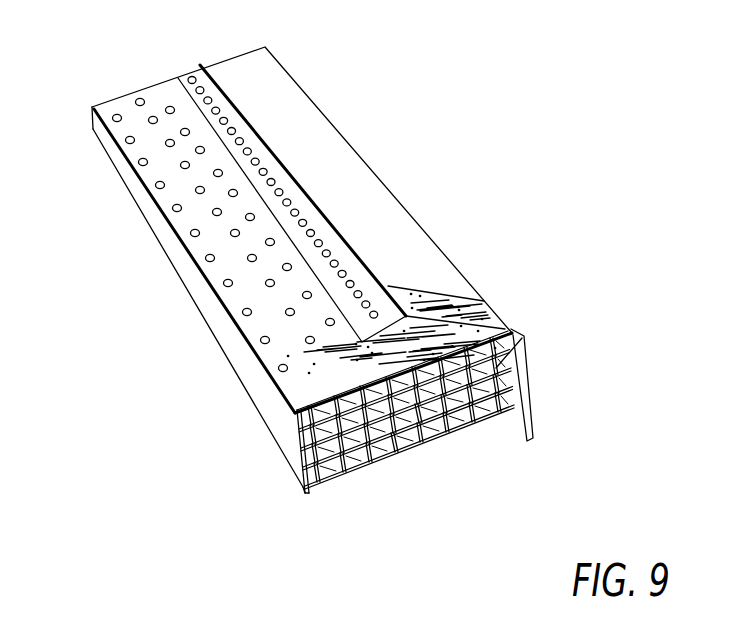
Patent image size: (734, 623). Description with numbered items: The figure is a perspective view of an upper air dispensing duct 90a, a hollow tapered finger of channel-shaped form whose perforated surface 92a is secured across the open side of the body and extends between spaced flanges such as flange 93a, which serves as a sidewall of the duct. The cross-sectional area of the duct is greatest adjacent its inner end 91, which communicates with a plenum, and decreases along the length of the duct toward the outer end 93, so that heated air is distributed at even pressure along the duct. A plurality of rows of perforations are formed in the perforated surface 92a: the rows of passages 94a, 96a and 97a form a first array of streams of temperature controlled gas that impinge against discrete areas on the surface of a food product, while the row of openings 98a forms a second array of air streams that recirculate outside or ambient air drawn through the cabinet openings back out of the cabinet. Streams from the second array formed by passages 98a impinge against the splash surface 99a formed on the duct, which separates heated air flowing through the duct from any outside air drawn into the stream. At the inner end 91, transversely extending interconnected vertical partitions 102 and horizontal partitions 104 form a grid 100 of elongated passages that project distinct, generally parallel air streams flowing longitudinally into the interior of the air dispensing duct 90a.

The air dispensing duct 90a is at (324, 159).
The inner end 91 is at (312, 494).
The perforated surface 92a is at (252, 320).
The outer end 93 is at (92, 107).
The flange 93a is at (262, 387).
The row of passages 94a is at (158, 188).
The row of passages 96a is at (168, 144).
The row of passages 97a is at (168, 107).
The row of openings 98a is at (190, 78).
The splash surface 99a is at (387, 223).
The grid 100 is at (463, 438).
The vertical partitions 102 is at (427, 447).
The horizontal partitions 104 is at (302, 450).